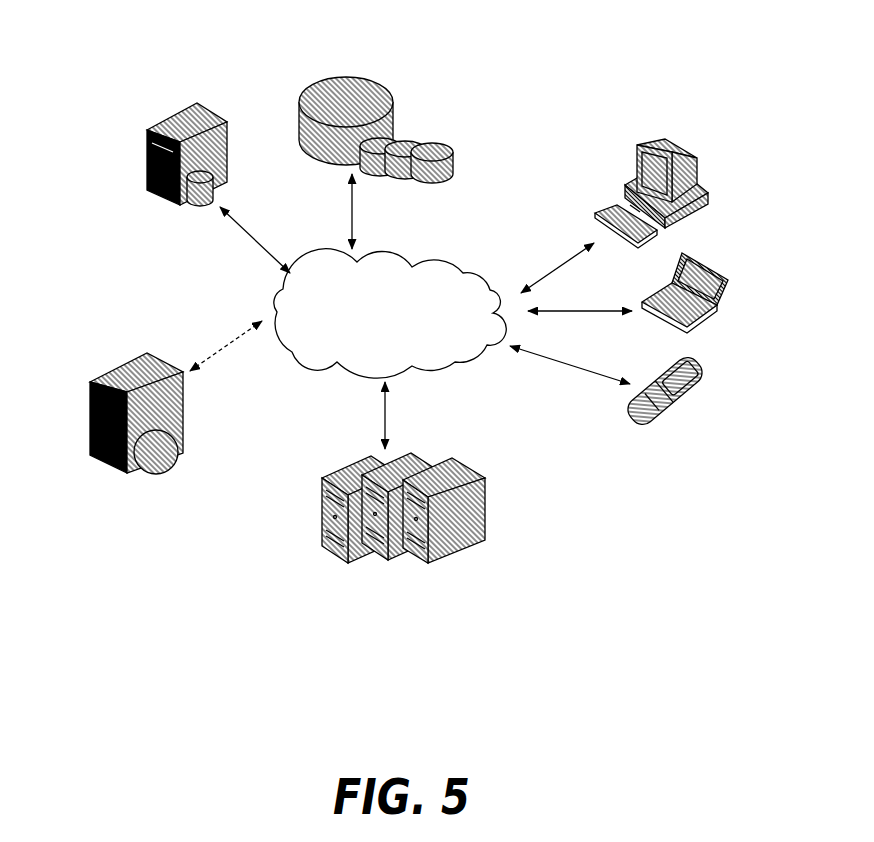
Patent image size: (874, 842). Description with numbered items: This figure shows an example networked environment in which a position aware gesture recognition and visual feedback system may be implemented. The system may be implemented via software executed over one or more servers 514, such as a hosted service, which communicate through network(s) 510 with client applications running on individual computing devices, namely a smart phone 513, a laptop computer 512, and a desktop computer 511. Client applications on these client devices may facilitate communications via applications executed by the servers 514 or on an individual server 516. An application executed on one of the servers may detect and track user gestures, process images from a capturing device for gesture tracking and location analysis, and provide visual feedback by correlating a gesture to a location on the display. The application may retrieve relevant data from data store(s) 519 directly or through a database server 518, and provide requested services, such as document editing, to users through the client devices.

The network(s) 510 is at (390, 241).
The desktop computer 511 is at (692, 131).
The laptop computer 512 is at (726, 252).
The smart phone 513 is at (695, 366).
The servers 514 is at (348, 453).
The individual server 516 is at (112, 362).
The database server 518 is at (187, 214).
The data store(s) 519 is at (363, 58).